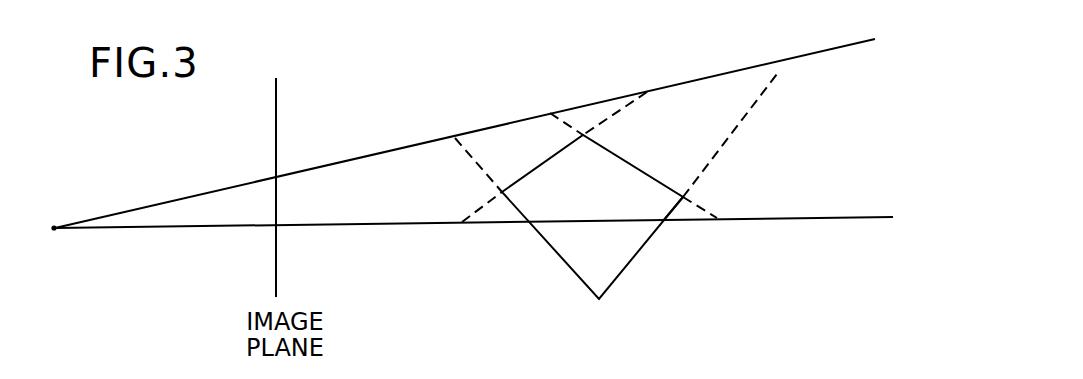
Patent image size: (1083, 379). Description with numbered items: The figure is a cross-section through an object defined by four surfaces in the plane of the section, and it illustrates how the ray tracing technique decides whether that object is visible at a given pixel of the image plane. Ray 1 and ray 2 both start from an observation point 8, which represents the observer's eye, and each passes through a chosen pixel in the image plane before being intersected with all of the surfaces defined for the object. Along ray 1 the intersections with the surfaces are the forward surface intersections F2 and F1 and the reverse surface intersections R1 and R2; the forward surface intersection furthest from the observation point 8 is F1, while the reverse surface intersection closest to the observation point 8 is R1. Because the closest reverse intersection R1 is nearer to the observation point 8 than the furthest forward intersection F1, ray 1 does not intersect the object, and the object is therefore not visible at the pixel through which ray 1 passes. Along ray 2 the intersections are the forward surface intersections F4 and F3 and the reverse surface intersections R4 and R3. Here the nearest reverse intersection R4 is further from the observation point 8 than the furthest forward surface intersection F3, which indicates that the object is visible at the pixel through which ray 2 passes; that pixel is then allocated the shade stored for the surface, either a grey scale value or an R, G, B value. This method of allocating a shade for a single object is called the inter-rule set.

The observation point 8 is at (52, 231).
The ray 1 is at (465, 133).
The ray 2 is at (474, 239).
The forward surface intersection F1 is at (623, 94).
The forward surface intersection F2 is at (465, 147).
The forward surface intersection F3 is at (522, 240).
The forward surface intersection F4 is at (474, 225).
The reverse surface intersection R1 is at (554, 108).
The reverse surface intersection R2 is at (739, 110).
The reverse surface intersection R3 is at (714, 228).
The reverse surface intersection R4 is at (676, 239).